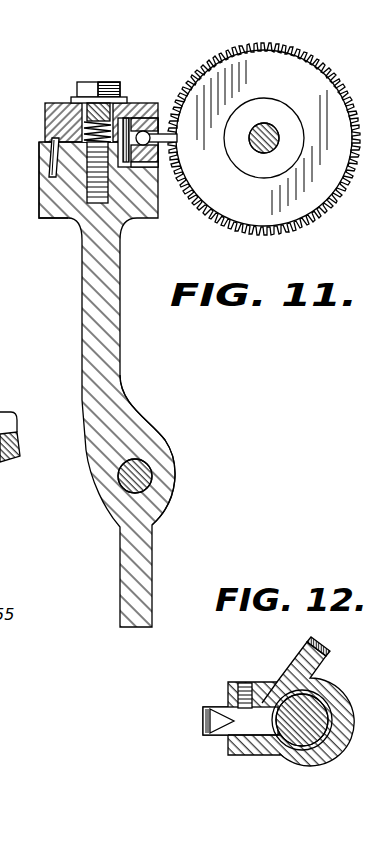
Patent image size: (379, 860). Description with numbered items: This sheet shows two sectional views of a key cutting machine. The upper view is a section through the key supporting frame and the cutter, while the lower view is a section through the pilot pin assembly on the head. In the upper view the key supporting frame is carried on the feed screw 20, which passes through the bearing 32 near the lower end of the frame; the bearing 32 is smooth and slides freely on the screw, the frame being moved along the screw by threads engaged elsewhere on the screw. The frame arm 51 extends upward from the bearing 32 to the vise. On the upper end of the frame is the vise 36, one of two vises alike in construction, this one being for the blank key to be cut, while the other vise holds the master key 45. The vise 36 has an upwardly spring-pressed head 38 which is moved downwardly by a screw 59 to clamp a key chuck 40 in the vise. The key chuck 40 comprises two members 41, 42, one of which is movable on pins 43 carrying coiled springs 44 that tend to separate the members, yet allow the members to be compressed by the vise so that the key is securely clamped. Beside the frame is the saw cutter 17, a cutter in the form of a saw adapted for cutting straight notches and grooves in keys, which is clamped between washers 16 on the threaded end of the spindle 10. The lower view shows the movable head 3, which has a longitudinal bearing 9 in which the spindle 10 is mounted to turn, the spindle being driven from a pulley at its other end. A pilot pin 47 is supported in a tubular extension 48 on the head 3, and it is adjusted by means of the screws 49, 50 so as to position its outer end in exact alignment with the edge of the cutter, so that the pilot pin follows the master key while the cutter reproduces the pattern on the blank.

In FIG. 12, the movable head 3 is at (340, 745).
In FIG. 11, the longitudinal bearing 9 is at (272, 146).
In FIG. 12, the longitudinal bearing 9 is at (296, 722).
In FIG. 12, the spindle 10 is at (302, 748).
In FIG. 11, the washers 16 is at (264, 138).
In FIG. 11, the saw cutter 17 is at (252, 86).
In FIG. 11, the feed screw 20 is at (130, 478).
In FIG. 11, the bearing 32 is at (165, 493).
In FIG. 11, the vise 36 is at (80, 200).
In FIG. 11, the spring-pressed head 38 is at (45, 123).
In FIG. 11, the key chuck 40 is at (149, 167).
In FIG. 11, the chuck member 41 is at (188, 94).
In FIG. 11, the chuck member 42 is at (158, 164).
In FIG. 11, the pins 43 is at (178, 142).
In FIG. 11, the coiled springs 44 is at (158, 128).
In FIG. 11, the master key 45 is at (126, 115).
In FIG. 12, the pilot pin 47 is at (203, 722).
In FIG. 12, the tubular extension 48 is at (235, 753).
In FIG. 12, the adjusting screw 49 is at (242, 683).
In FIG. 12, the adjusting screw 50 is at (288, 668).
In FIG. 11, the lever 51 is at (107, 275).
In FIG. 11, the adjusting screw 59 is at (113, 84).